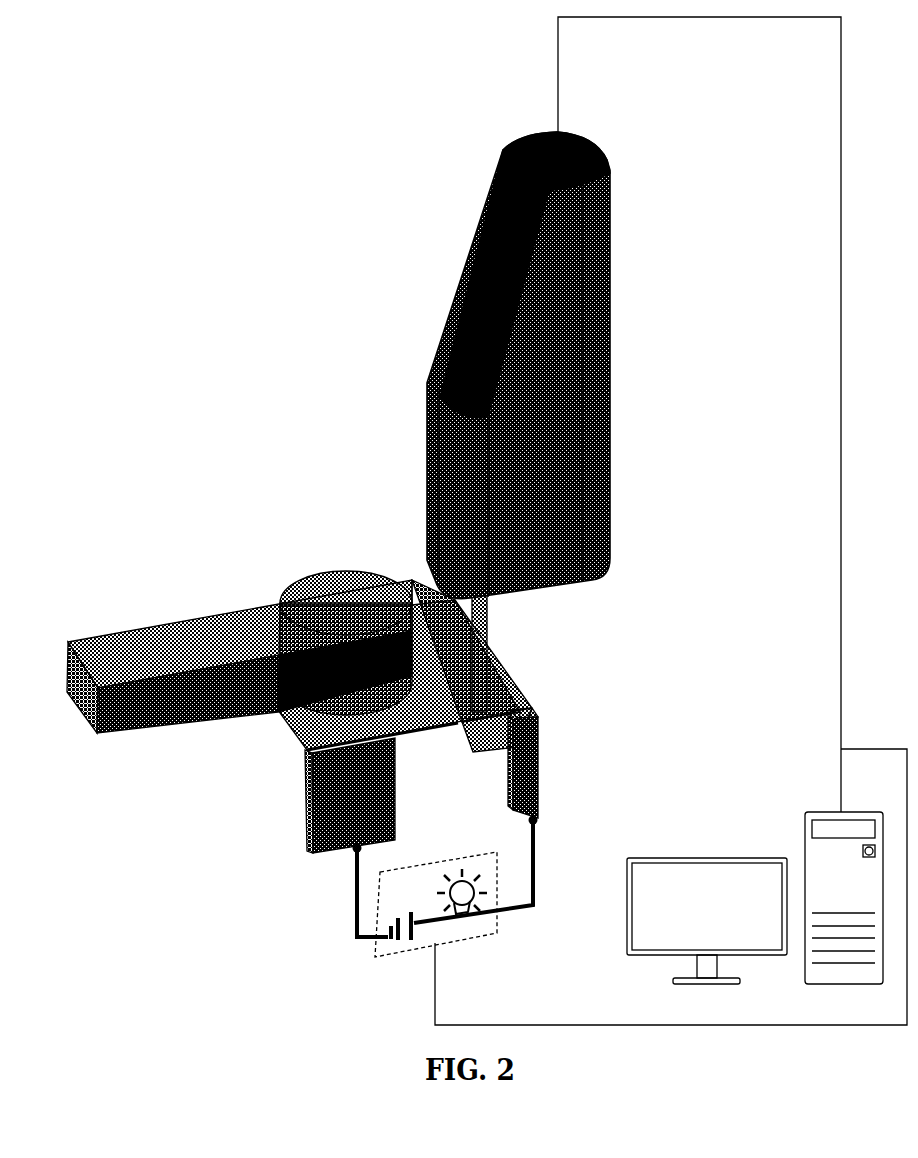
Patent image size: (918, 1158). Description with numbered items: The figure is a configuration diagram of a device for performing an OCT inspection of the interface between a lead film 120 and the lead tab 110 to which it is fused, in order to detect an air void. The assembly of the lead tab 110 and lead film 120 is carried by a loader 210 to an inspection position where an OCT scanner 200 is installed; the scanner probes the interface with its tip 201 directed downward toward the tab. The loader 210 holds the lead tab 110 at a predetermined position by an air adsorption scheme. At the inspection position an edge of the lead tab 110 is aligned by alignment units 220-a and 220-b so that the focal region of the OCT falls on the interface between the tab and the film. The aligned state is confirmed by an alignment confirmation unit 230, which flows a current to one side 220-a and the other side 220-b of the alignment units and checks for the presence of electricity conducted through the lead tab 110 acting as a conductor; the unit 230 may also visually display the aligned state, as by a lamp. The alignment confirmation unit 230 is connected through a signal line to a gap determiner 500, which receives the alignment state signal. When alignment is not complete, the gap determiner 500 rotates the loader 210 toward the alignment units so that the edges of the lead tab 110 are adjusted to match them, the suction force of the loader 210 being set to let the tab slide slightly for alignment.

The lead tab 110 is at (293, 725).
The lead film 120 is at (488, 738).
The OCT scanner 200 is at (556, 447).
The tool tip 201 is at (480, 650).
The loader 210 is at (228, 636).
The alignment unit 220-a is at (335, 805).
The alignment unit 220-b is at (532, 780).
The alignment confirmation unit 230 is at (467, 937).
The gap determiner 500 is at (828, 812).